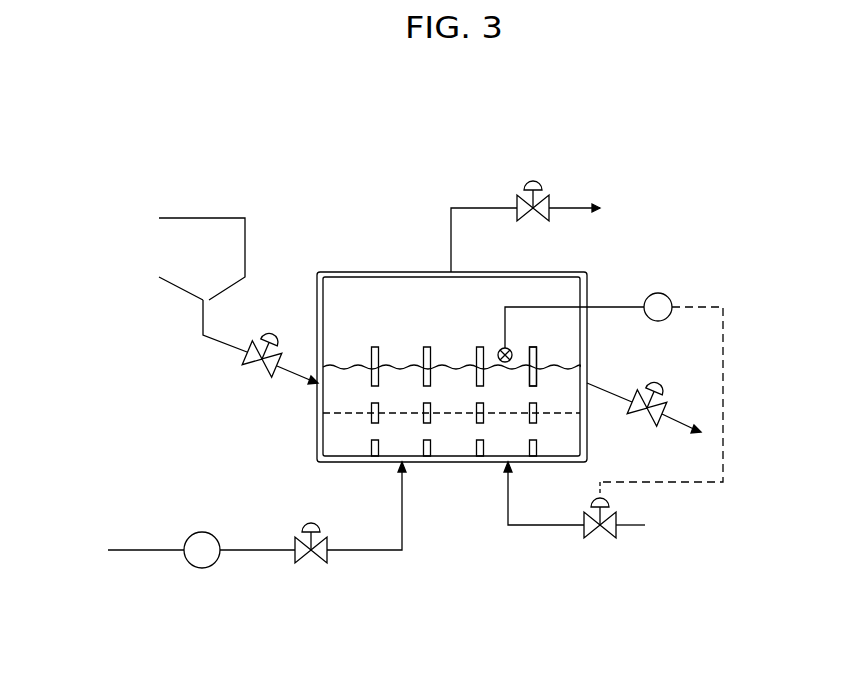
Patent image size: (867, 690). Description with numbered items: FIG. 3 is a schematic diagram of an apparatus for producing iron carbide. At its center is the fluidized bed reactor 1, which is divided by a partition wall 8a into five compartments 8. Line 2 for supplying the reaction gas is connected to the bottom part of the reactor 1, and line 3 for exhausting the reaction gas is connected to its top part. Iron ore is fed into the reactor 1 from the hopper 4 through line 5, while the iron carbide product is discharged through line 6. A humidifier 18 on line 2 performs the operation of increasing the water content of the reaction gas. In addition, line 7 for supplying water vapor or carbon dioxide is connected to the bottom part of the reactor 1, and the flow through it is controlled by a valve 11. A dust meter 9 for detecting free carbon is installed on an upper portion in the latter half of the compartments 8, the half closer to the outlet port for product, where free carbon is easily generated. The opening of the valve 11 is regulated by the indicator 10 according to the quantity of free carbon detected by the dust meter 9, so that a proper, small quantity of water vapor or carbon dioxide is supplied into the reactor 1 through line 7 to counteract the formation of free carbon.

The fluidized bed reactor 1 is at (395, 272).
The line for supplying a reaction gas 2 is at (358, 552).
The line for exhausting the reaction gas 3 is at (572, 206).
The hopper 4 is at (215, 218).
The line 5 is at (226, 352).
The line 6 is at (607, 398).
The line for supplying H2O or CO2 7 is at (539, 527).
The compartments 8 is at (562, 392).
The partition wall 8a is at (537, 357).
The dust meter 9 is at (498, 350).
The indicator 10 is at (670, 296).
The valve 11 is at (606, 537).
The humidifier 18 is at (202, 568).